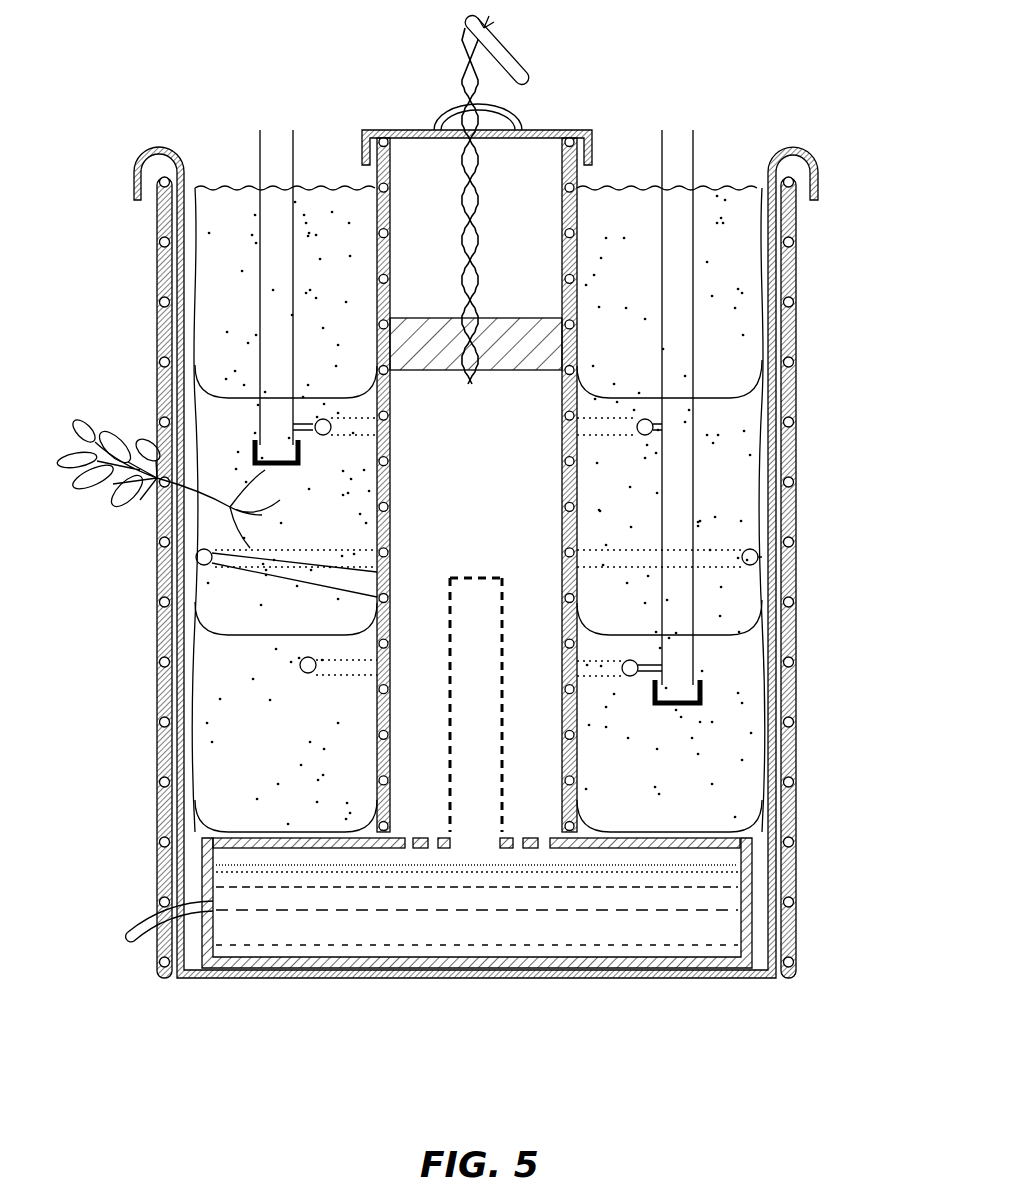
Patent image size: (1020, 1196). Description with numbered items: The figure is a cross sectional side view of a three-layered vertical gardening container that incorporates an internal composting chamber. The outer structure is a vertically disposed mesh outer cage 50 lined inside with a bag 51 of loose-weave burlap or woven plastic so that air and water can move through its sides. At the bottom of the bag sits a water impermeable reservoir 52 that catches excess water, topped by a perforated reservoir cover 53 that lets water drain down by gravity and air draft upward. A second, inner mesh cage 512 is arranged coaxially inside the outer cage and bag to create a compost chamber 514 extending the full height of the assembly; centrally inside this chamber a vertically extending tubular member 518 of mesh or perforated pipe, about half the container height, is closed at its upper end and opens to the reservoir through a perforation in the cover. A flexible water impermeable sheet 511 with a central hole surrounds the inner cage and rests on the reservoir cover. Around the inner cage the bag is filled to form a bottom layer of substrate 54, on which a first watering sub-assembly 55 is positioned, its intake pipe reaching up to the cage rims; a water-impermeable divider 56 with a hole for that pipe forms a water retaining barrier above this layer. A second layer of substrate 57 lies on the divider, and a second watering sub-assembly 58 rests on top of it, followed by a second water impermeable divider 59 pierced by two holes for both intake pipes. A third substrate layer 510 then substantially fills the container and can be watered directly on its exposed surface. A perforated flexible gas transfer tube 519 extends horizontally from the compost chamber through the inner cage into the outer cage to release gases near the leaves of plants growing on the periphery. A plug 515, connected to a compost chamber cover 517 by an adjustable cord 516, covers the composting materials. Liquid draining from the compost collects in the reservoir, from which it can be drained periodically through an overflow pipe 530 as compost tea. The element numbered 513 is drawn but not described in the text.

The mesh outer cage 50 is at (165, 272).
The bag 51 is at (137, 172).
The reservoir 52 is at (705, 978).
The reservoir cover 53 is at (507, 850).
The bottom layer of substrate 54 is at (730, 728).
The first watering sub-assembly 55 is at (300, 663).
The water-impermeable divider 56 is at (263, 630).
The second layer of substrate 57 is at (730, 527).
The second watering sub-assembly 58 is at (275, 235).
The second water impermeable divider 59 is at (712, 398).
The third substrate layer 510 is at (715, 247).
The flexible sheet 511 is at (197, 806).
The inner mesh cage 512 is at (577, 733).
The tray bottom 513 is at (577, 762).
The compost chamber 514 is at (497, 530).
The plug 515 is at (520, 318).
The adjustable cord 516 is at (458, 182).
The compost chamber cover 517 is at (552, 130).
The tubular member 518 is at (450, 726).
The gas transfer tube 519 is at (196, 555).
The overflow pipe 530 is at (143, 922).